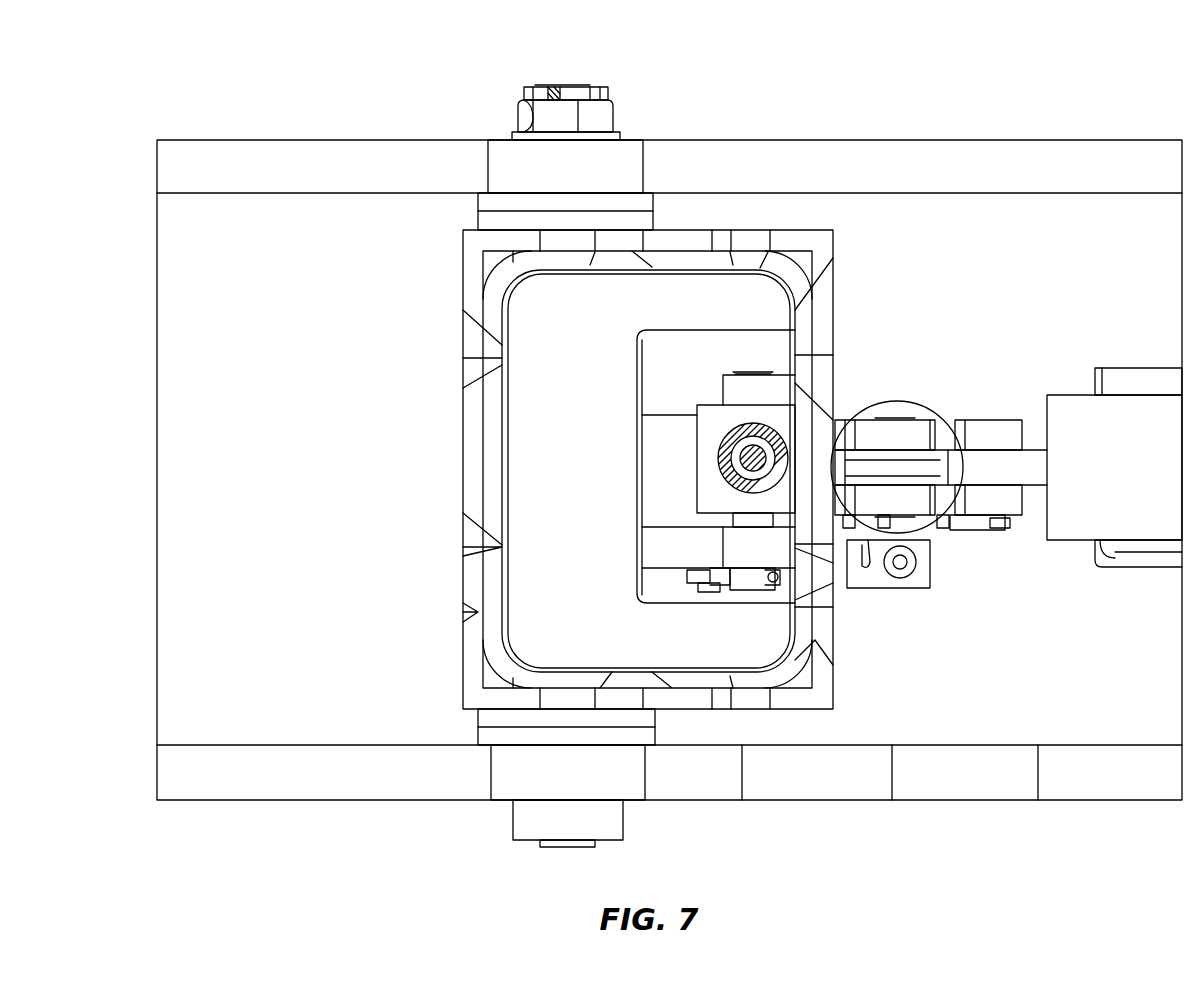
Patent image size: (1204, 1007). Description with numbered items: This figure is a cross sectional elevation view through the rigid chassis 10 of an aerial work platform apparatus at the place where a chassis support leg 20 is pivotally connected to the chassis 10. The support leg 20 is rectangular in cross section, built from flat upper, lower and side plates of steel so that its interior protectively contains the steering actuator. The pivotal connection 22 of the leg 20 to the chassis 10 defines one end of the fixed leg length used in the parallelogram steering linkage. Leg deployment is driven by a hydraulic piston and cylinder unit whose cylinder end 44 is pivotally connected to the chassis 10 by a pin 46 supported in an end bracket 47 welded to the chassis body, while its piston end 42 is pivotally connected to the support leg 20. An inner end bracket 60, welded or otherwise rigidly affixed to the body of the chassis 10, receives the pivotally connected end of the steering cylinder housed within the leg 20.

The chassis 10 is at (333, 140).
The chassis support leg 20 is at (788, 230).
The pivotal connection of support leg to chassis 22 is at (577, 85).
The piston end 42 is at (748, 480).
The cylinder end 44 is at (775, 488).
The pin 46 is at (755, 592).
The end bracket 47 is at (1015, 420).
The inner end bracket 60 is at (713, 372).